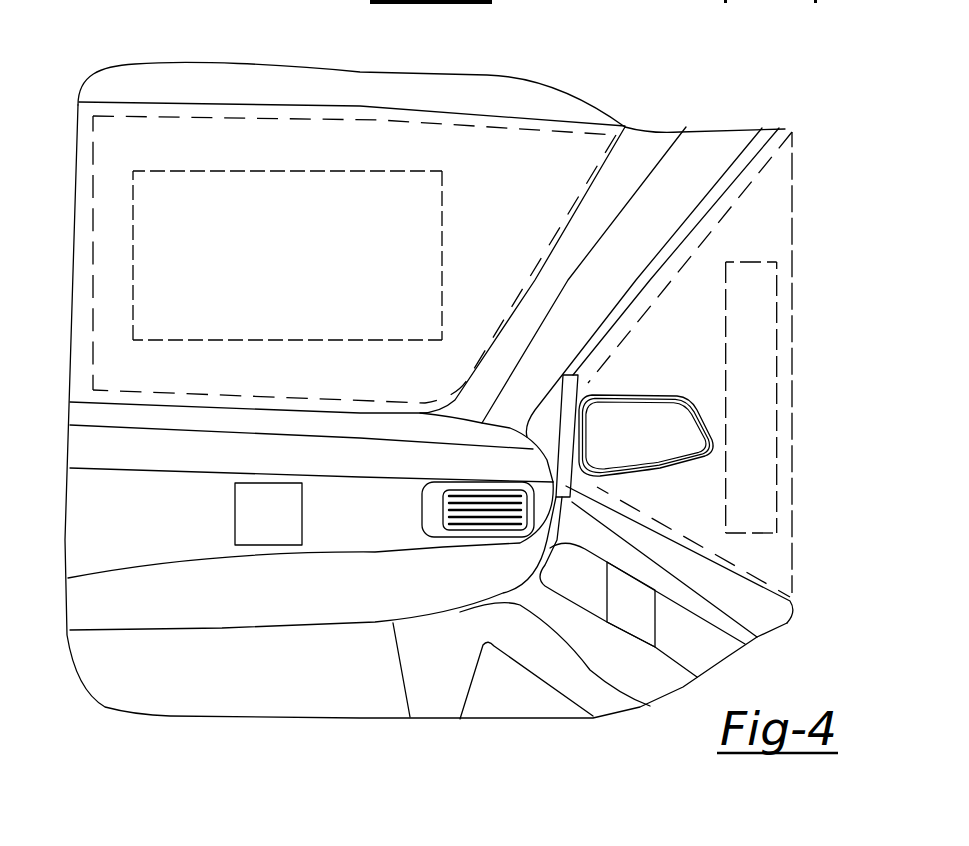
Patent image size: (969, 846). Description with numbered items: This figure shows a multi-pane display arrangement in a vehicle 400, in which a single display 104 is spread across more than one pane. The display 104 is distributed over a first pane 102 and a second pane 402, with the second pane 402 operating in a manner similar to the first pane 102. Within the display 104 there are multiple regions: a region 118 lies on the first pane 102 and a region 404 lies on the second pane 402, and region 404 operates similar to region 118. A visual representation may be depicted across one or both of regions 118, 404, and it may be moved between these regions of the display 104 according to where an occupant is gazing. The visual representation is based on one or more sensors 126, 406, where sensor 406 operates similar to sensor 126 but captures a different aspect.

The first pane 102 is at (150, 110).
The display 104 is at (270, 118).
The region 118 is at (305, 268).
The sensor 126 is at (250, 510).
The vehicle 400 is at (708, 157).
The second pane 402 is at (725, 200).
The region 404 is at (753, 417).
The sensor 406 is at (640, 612).